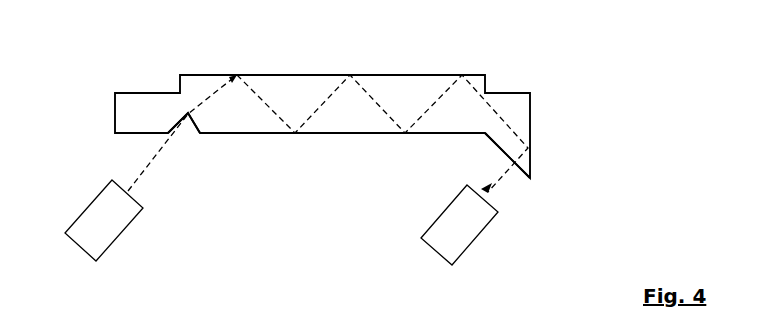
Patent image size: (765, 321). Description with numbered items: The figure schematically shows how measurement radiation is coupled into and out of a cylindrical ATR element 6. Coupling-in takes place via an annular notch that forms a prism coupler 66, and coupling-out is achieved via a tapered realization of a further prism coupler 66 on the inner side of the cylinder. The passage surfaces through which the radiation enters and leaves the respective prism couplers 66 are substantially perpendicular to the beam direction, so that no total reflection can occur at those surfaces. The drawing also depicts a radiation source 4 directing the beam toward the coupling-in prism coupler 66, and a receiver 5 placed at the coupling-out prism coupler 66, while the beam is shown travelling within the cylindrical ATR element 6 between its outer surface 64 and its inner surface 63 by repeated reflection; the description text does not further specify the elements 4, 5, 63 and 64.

The light source 4 is at (92, 225).
The light detector 5 is at (477, 237).
The light guide element 6 is at (290, 97).
The bottom surface of light guide 63 is at (332, 133).
The top surface of light guide 64 is at (330, 75).
The coupling surface 66 is at (197, 127).